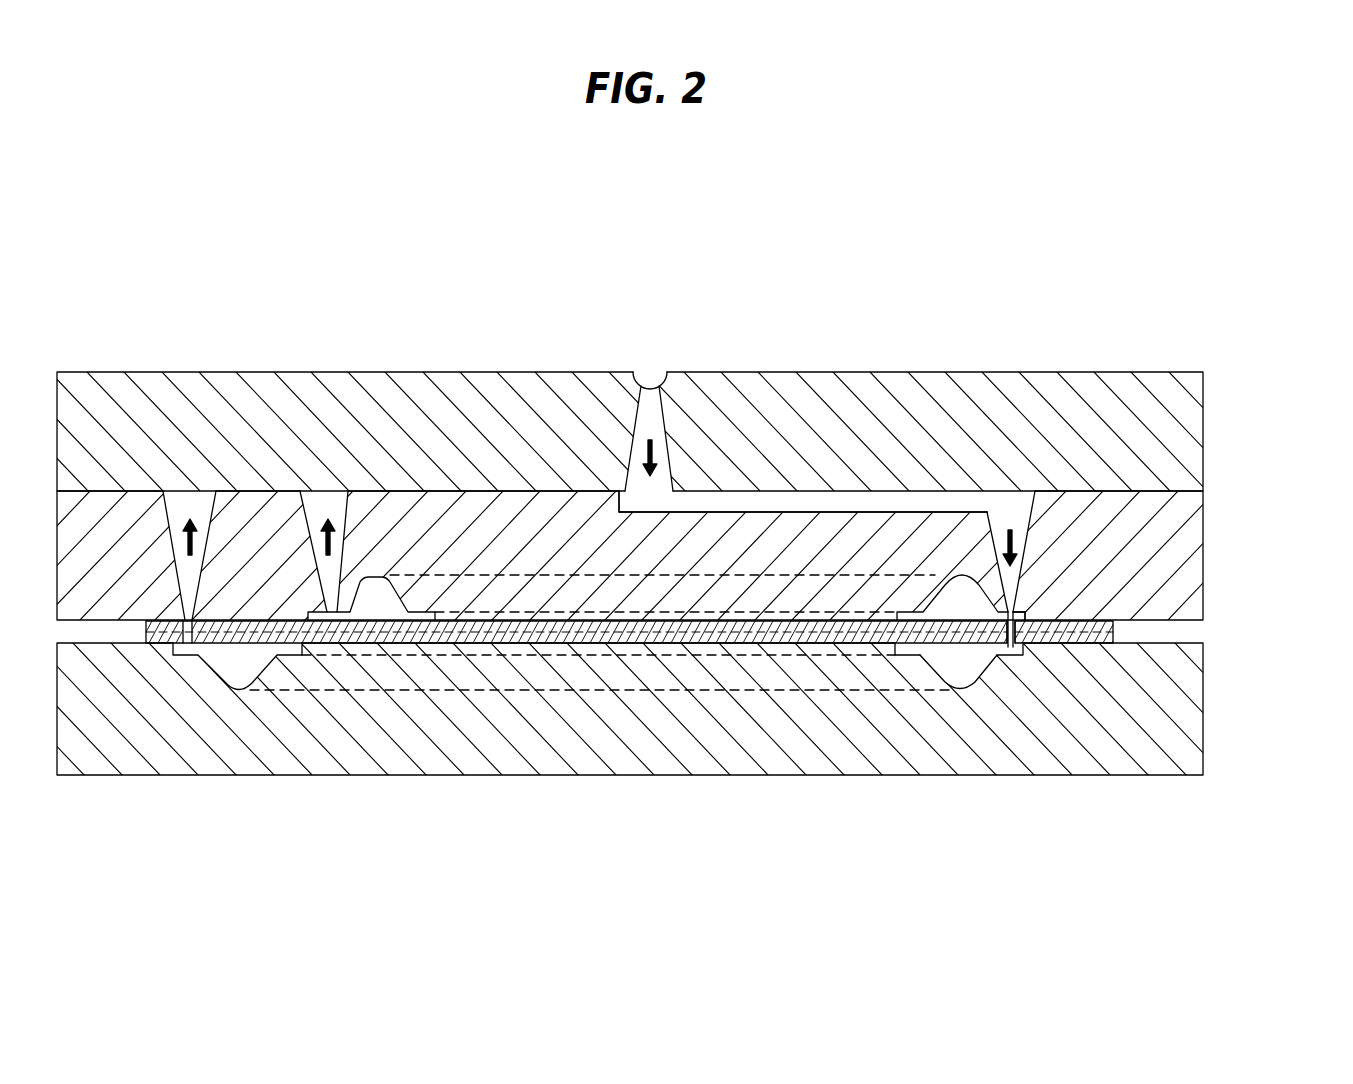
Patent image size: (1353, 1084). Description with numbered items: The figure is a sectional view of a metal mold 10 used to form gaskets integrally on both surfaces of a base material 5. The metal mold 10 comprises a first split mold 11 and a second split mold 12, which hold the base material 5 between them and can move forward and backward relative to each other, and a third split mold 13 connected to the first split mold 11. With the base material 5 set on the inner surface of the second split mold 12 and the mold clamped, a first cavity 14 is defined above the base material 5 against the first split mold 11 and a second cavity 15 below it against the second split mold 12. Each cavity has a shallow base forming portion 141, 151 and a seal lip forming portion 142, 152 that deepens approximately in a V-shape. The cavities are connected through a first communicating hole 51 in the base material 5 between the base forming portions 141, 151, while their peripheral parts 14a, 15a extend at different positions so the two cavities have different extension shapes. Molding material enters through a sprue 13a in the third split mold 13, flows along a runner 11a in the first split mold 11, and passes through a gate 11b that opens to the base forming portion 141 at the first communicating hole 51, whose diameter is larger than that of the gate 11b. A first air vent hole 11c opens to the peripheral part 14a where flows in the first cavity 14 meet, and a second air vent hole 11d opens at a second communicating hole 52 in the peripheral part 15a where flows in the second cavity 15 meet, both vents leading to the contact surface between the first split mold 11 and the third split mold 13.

The metal mold 10 is at (741, 312).
The base material 5 is at (614, 754).
The first split mold 11 is at (663, 457).
The runner 11a is at (810, 505).
The gate 11b is at (1020, 597).
The first air vent hole 11c is at (327, 502).
The second air vent hole 11d is at (183, 503).
The second split mold 12 is at (660, 778).
The third split mold 13 is at (665, 372).
The sprue 13a is at (650, 371).
The first cavity 14 is at (1095, 464).
The peripheral part of the first cavity 14a is at (378, 590).
The base forming portion 141 is at (1020, 608).
The seal lip forming portion 142 is at (943, 597).
The second cavity 15 is at (1066, 778).
The peripheral part of the second cavity 15a is at (238, 673).
The base forming portion 151 is at (1025, 648).
The seal lip forming portion 152 is at (942, 673).
The first communicating hole 51 is at (1012, 623).
The second communicating hole 52 is at (183, 622).